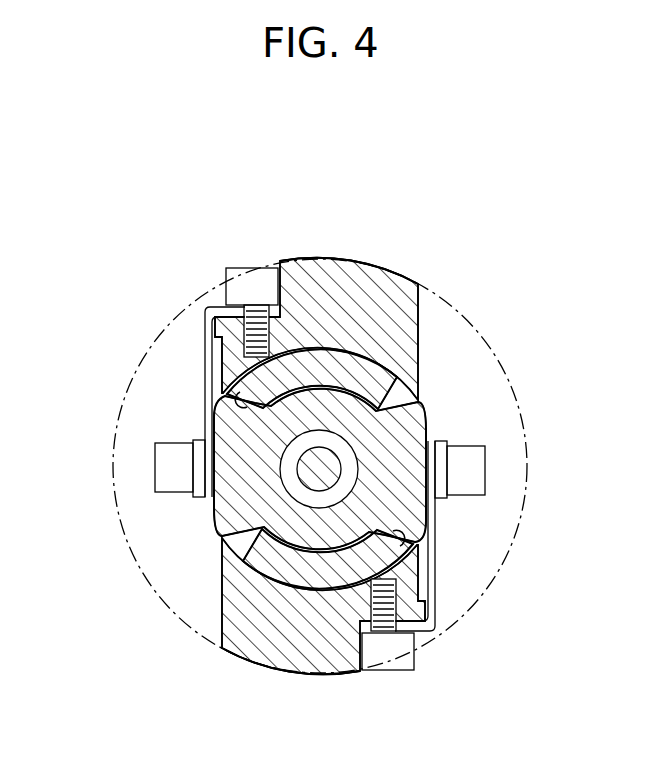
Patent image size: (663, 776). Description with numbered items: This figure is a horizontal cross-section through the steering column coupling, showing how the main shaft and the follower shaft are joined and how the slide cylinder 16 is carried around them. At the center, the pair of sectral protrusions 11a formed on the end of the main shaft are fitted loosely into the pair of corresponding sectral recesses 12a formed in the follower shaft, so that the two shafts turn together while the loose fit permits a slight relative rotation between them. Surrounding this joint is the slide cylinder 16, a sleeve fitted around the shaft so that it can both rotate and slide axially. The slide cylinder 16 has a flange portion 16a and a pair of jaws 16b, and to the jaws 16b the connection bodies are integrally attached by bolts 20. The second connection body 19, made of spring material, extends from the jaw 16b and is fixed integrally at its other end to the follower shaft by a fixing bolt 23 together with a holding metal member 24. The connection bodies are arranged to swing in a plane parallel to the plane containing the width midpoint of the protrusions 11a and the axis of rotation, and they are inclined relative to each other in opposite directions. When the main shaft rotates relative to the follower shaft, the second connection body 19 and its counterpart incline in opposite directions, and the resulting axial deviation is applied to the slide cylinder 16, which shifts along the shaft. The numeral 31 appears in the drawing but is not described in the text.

The sectral protrusions 11a is at (363, 372).
The sectral recesses 12a is at (250, 405).
The slide cylinder 16 is at (232, 657).
The flange portion 16a is at (500, 563).
The jaws 16b is at (332, 262).
The second connection body 19 is at (210, 353).
The bolts 20 is at (238, 272).
The fixing bolt 23 is at (165, 472).
The holding metal member 24 is at (200, 493).
The shaft 31 is at (325, 475).